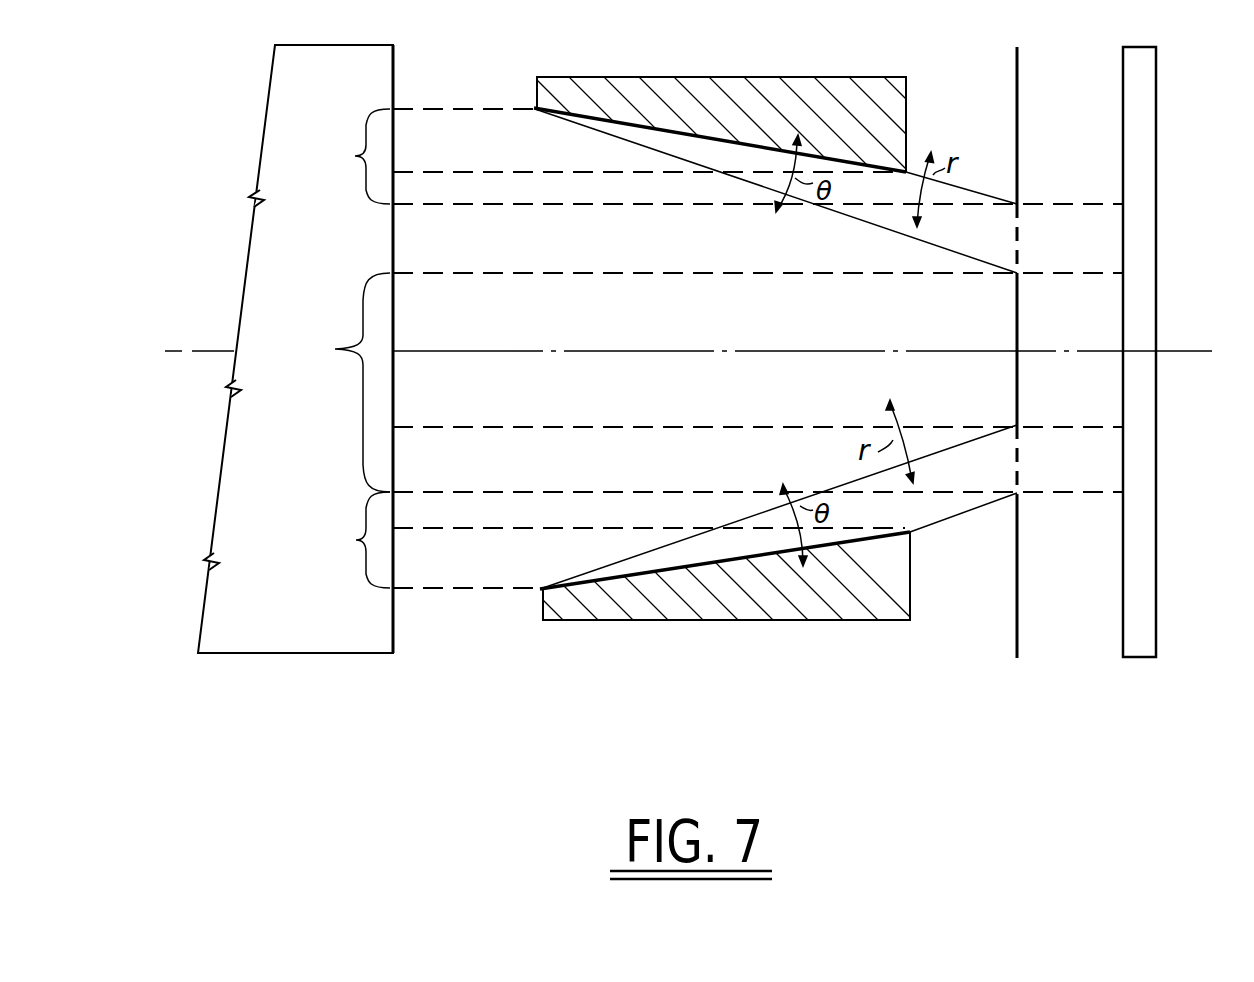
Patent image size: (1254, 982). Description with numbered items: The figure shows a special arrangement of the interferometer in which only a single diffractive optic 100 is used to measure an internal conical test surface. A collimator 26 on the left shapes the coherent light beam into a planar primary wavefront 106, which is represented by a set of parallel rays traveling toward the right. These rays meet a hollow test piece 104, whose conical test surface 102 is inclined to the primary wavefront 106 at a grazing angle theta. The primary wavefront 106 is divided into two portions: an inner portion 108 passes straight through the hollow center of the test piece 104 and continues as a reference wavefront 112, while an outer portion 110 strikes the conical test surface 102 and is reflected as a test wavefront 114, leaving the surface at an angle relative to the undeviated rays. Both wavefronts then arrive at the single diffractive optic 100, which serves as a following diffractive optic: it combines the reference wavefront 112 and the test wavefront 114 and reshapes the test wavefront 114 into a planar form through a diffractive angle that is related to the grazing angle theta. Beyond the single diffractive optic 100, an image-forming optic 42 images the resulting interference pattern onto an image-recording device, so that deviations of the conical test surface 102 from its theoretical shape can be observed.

The collimator 26 is at (217, 597).
The image-forming optic 42 is at (1160, 625).
The single diffractive optic 100 is at (1016, 613).
The conical test surface 102 is at (690, 558).
The hollow test piece 104 is at (750, 90).
The primary wavefront 106 is at (488, 108).
The inner portion of the primary wavefront 108 is at (334, 382).
The outer portion of the primary wavefront 110 is at (345, 348).
The reference wavefront 112 is at (733, 208).
The test wavefront 114 is at (880, 228).